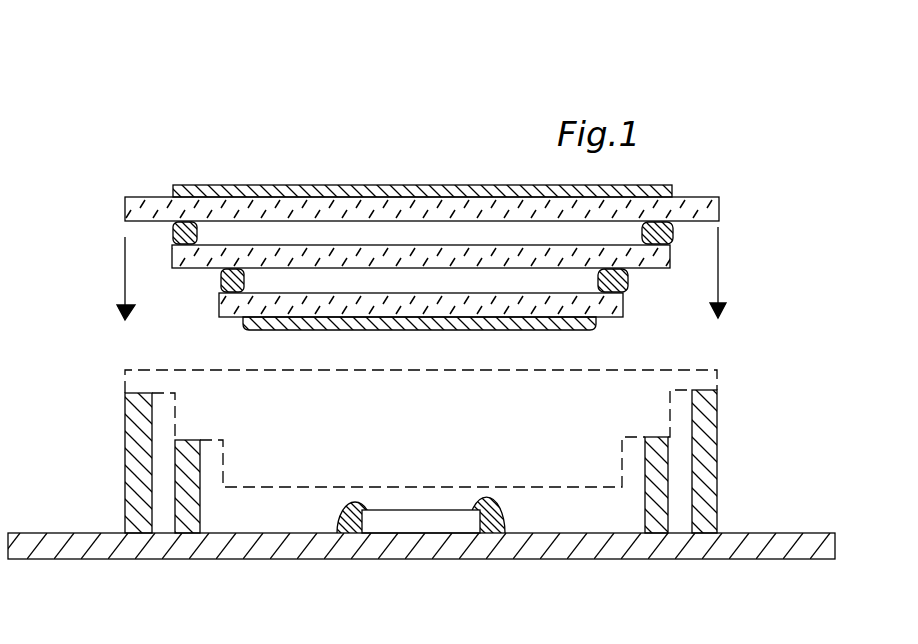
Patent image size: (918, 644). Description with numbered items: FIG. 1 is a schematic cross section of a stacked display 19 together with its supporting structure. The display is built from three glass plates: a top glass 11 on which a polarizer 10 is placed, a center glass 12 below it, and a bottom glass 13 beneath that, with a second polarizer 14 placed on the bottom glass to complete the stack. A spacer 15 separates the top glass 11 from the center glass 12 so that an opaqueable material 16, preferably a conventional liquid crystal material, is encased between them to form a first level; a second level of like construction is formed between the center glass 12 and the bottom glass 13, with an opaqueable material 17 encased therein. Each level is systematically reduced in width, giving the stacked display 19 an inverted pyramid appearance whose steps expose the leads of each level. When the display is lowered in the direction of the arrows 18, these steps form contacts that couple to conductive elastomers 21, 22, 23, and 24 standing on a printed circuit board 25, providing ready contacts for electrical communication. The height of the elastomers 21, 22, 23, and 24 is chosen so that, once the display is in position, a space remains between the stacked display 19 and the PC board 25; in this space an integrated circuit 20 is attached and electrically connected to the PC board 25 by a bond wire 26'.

The polarizer 10 is at (192, 186).
The top glass 11 is at (132, 208).
The center glass 12 is at (198, 268).
The bottom glass 13 is at (220, 312).
The polarizer 14 is at (318, 329).
The spacer 15 is at (172, 233).
The opaqueable material 16 is at (630, 236).
The opaqueable material 17 is at (592, 283).
The arrows 18 is at (125, 295).
The stacked display 19 is at (705, 378).
The integrated circuit 20 is at (403, 525).
The conductive elastomer 21 is at (135, 482).
The conductive elastomer 22 is at (193, 488).
The conductive elastomer 23 is at (652, 517).
The conductive elastomer 24 is at (712, 468).
The printed circuit board 25 is at (120, 553).
The bond wire 26' is at (445, 515).